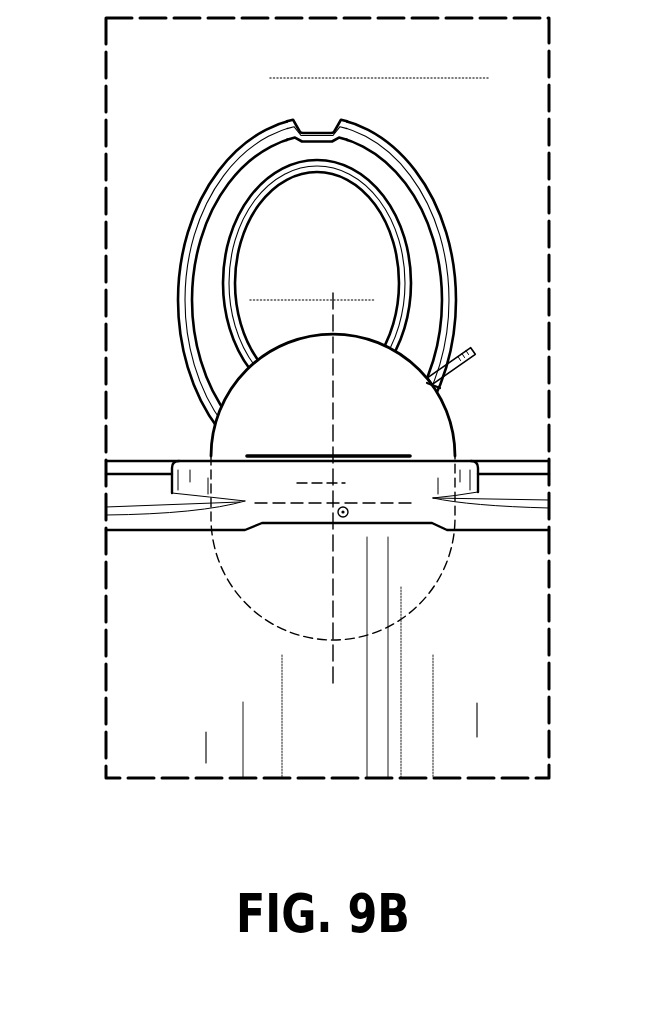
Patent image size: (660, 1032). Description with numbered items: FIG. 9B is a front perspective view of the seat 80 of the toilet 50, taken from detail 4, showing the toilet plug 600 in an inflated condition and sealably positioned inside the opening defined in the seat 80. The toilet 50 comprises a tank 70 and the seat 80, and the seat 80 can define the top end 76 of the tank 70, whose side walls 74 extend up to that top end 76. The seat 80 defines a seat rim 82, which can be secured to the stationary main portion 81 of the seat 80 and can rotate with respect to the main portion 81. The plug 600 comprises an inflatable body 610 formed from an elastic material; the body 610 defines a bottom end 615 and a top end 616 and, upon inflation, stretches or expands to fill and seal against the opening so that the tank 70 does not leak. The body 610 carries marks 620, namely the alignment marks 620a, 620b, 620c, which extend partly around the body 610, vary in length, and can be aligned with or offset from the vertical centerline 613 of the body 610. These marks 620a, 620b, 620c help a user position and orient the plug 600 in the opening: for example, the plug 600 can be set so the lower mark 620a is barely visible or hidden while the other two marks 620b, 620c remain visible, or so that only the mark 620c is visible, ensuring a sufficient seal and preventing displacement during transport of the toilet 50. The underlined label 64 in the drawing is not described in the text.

The toilet 50 is at (50, 196).
The seat rim 82 is at (273, 155).
The seat opening 64 is at (522, 255).
The toilet plug 600 is at (294, 377).
The inflatable body 610 is at (343, 438).
The top end 616 is at (345, 333).
The bottom end 615 is at (370, 642).
The vertical centerline 613 is at (330, 672).
The marks 620 is at (266, 448).
The lower alignment mark 620a is at (257, 503).
The alignment mark 620b is at (297, 483).
The alignment mark 620c is at (308, 453).
The tank 70 is at (383, 523).
The side walls 74 is at (383, 523).
The top end 76 is at (525, 485).
The seat 80 is at (175, 539).
The main portion 81 is at (185, 490).
The detail 4 is at (4, 667).